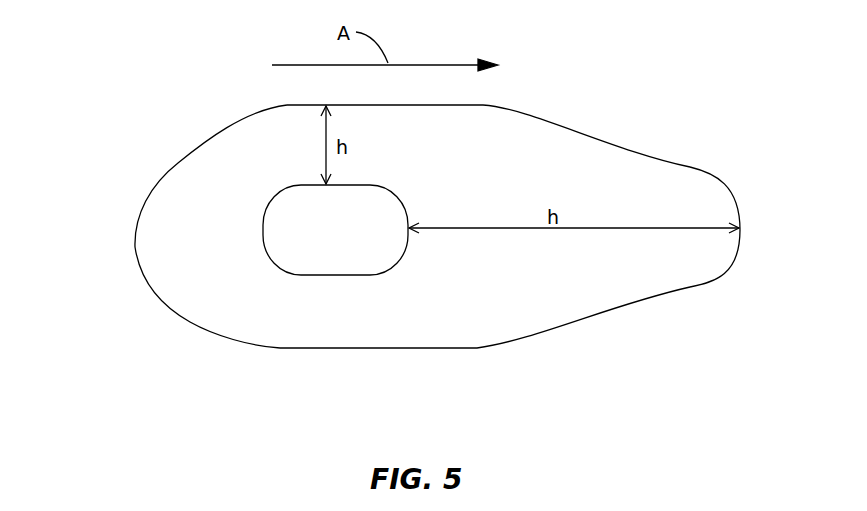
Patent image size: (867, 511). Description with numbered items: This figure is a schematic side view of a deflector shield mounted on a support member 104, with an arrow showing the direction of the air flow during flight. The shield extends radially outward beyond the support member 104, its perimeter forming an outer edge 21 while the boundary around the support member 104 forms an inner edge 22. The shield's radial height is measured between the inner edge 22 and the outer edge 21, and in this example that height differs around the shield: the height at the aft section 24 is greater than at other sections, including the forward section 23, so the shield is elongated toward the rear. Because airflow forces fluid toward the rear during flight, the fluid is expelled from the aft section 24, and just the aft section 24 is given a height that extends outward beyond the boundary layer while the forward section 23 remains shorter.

The outer edge 21 is at (522, 338).
The inner edge 22 is at (342, 295).
The forward section 23 is at (135, 245).
The aft section 24 is at (740, 222).
The support member 104 is at (353, 241).